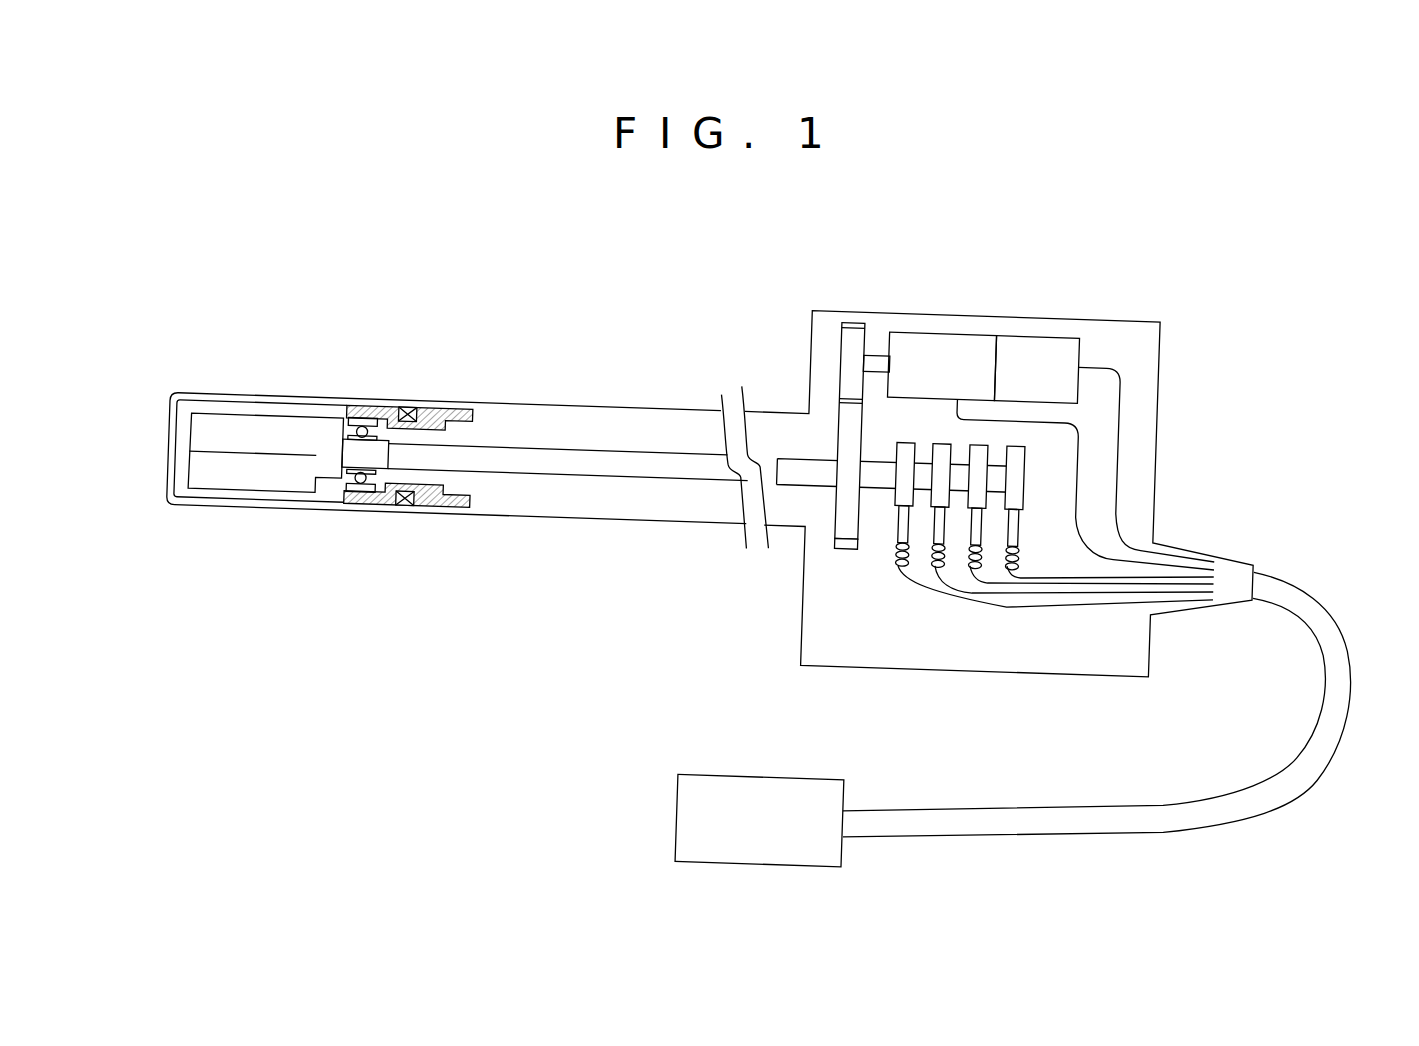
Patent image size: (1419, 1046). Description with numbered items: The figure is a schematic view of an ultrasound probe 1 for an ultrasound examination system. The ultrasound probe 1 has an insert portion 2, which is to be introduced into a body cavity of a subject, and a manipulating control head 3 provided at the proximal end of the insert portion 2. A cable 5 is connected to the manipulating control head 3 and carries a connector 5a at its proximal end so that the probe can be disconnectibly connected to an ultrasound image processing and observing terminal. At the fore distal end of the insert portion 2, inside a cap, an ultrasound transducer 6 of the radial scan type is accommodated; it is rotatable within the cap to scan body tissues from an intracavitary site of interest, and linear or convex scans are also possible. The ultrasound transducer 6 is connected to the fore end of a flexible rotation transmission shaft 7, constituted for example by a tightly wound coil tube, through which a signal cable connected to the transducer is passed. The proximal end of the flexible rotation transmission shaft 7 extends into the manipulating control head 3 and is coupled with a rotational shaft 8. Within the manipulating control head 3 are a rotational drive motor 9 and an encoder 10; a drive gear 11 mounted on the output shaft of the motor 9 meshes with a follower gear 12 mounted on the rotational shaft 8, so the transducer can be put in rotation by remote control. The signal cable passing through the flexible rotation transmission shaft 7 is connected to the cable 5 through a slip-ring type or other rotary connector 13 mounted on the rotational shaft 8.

The ultrasound probe 1 is at (604, 409).
The insert portion 2 is at (538, 524).
The manipulating control head 3 is at (1154, 437).
The cable 5 is at (1181, 816).
The connector 5a is at (710, 803).
The ultrasound transducer 6 is at (236, 496).
The flexible rotation transmission shaft 7 is at (527, 463).
The rotational shaft 8 is at (789, 478).
The rotational drive motor 9 is at (945, 337).
The encoder 10 is at (1050, 328).
The drive gear 11 is at (843, 355).
The follower gear 12 is at (846, 528).
The rotary connector 13 is at (933, 499).